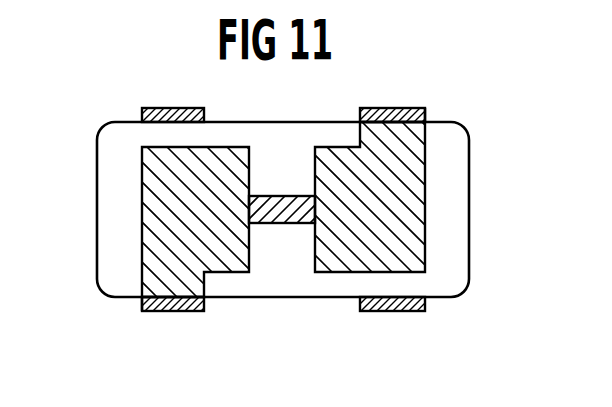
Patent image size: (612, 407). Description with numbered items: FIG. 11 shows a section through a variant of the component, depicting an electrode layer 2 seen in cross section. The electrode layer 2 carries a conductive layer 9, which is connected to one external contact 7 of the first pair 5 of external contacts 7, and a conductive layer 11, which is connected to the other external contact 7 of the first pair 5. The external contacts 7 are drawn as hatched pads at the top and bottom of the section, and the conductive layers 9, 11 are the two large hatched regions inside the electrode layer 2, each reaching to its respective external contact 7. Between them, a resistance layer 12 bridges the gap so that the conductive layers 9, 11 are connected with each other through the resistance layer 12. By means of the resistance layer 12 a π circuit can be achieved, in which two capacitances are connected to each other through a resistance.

The electrode layer 2 is at (447, 175).
The first pair of external contacts 5 is at (397, 108).
The external contact 7 is at (425, 113).
The conductive layer 9 is at (160, 212).
The conductive layer 11 is at (402, 222).
The resistance layer 12 is at (283, 196).